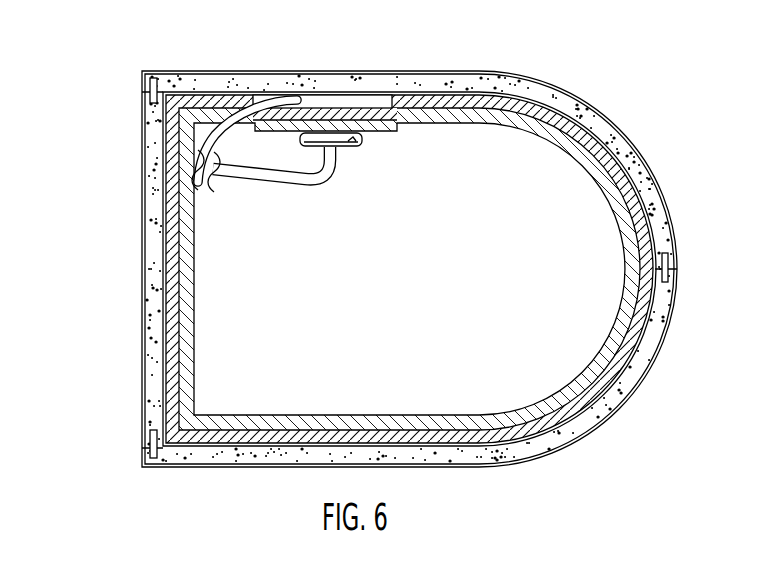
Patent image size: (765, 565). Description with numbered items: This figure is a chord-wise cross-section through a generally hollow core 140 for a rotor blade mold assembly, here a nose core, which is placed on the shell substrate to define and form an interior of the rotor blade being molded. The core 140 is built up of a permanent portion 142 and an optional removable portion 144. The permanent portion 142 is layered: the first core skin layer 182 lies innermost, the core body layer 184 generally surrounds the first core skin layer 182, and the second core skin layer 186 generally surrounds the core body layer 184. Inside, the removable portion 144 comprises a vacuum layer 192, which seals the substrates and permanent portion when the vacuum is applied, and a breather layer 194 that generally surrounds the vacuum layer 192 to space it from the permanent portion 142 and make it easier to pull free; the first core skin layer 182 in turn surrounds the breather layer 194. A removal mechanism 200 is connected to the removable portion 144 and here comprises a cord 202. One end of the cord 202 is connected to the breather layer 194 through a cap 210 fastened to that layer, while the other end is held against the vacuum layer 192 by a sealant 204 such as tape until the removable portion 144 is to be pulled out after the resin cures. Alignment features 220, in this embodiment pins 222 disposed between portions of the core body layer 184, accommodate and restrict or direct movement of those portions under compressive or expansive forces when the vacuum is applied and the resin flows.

The generally hollow core 140 is at (67, 95).
The permanent portion 142 is at (641, 142).
The removable portion 144 is at (567, 178).
The first core skin layer 182 is at (490, 107).
The core body layer 184 is at (562, 120).
The second core skin layer 186 is at (555, 102).
The vacuum layer 192 is at (502, 133).
The breather layer 194 is at (472, 110).
The removal mechanism 200 is at (340, 178).
The cord 202 is at (258, 172).
The sealant 204 is at (357, 145).
The cap 210 is at (372, 103).
The alignment feature 220 is at (139, 101).
The pin 222 is at (157, 82).